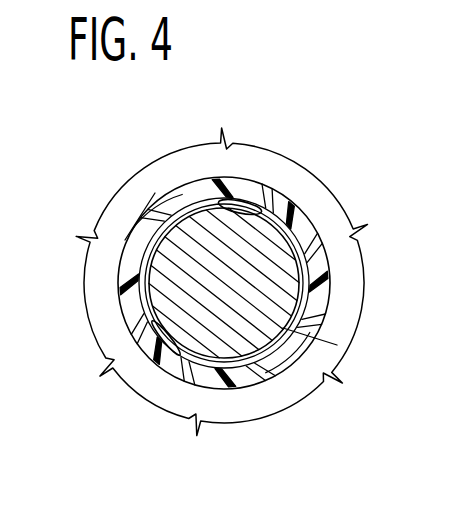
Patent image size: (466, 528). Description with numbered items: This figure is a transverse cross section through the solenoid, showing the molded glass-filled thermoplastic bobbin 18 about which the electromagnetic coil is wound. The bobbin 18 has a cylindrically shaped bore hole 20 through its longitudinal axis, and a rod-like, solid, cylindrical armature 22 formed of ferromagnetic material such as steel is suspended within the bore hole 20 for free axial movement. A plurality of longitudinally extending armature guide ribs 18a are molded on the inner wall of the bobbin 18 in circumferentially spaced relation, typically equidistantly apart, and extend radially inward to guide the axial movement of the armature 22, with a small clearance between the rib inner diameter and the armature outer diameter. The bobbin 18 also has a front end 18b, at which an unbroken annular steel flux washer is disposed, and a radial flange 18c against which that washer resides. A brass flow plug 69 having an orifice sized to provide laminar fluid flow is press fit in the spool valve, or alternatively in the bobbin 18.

The bobbin 18 is at (222, 186).
The armature guide ribs 18a is at (263, 210).
The front end of the bobbin 18b is at (313, 250).
The radial flange of the bobbin 18c is at (337, 342).
The bore hole 20 is at (252, 358).
The armature 22 is at (170, 240).
The flow plug 69 is at (271, 282).